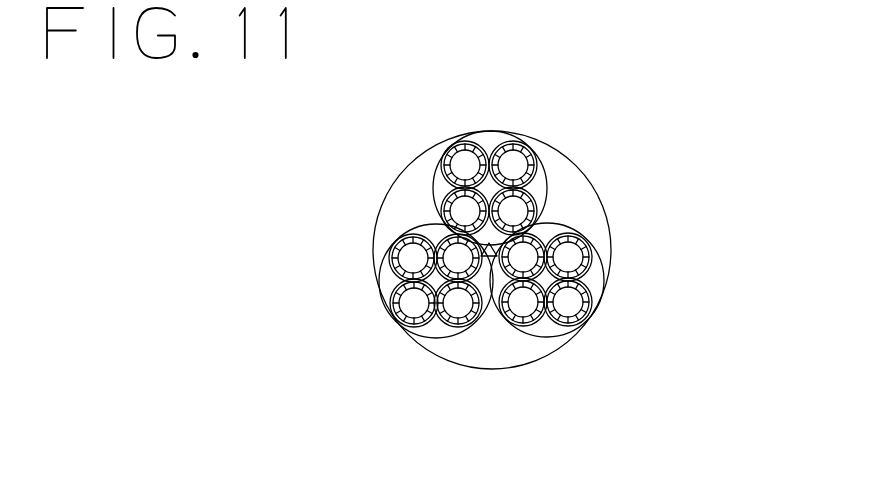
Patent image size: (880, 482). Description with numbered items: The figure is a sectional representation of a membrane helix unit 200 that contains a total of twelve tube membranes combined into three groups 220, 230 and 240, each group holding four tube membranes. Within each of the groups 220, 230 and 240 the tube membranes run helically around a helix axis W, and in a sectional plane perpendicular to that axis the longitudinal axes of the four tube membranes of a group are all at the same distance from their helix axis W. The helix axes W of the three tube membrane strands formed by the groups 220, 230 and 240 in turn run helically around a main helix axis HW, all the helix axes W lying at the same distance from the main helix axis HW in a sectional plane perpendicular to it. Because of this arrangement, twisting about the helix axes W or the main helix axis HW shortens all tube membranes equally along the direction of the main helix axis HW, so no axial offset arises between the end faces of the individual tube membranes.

The membrane helix unit 200 is at (656, 127).
The group of tube membranes 220 is at (556, 333).
The group of tube membranes 230 is at (428, 340).
The group of tube membranes 240 is at (436, 184).
The helix axis W is at (298, 113).
The main helix axis HW is at (488, 258).